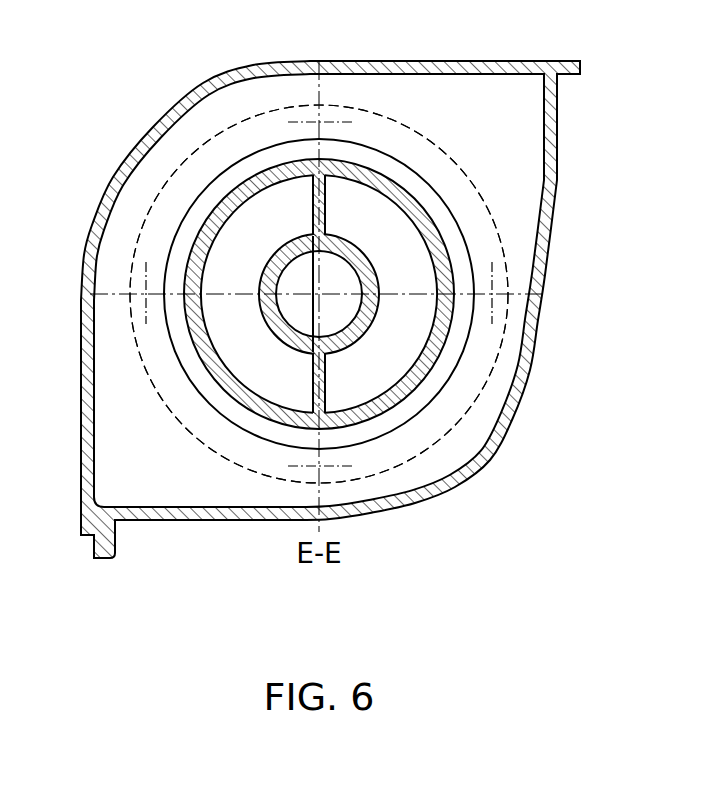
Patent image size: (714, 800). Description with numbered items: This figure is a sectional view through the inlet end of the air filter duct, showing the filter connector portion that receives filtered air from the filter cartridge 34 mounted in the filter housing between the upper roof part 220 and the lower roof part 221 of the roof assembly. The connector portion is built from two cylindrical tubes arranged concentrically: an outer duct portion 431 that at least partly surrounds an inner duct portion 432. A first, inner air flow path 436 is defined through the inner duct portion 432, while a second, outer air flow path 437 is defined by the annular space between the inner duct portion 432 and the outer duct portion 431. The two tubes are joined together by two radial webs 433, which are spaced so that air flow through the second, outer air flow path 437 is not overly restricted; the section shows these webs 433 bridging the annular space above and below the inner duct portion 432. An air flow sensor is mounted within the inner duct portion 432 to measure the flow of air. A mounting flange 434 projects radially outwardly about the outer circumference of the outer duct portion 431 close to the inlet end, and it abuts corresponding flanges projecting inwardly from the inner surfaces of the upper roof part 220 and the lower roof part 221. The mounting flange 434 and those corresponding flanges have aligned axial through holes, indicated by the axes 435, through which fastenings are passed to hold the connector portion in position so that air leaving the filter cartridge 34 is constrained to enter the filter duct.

The upper roof part 220 is at (262, 63).
The lower roof part 221 is at (220, 513).
The filter cartridge 34 is at (142, 378).
The outer duct portion 431 is at (193, 253).
The inner duct portion 432 is at (357, 240).
The radial webs 433 is at (312, 197).
The mounting flange 434 is at (378, 430).
The axes of through holes 435 is at (321, 122).
The first, inner air flow path 436 is at (342, 306).
The second, outer air flow path 437 is at (284, 370).